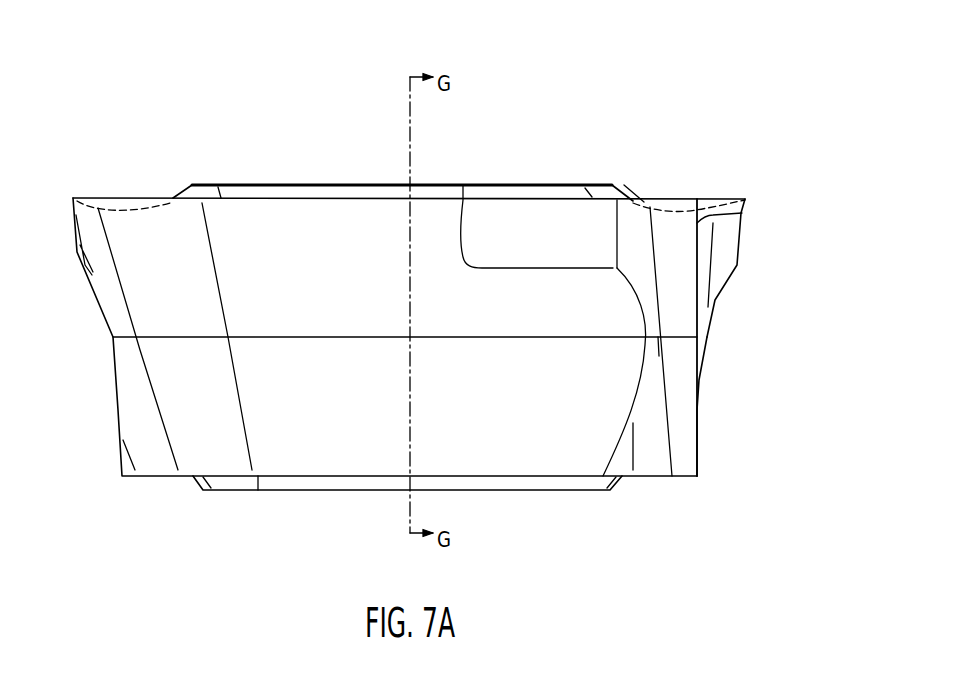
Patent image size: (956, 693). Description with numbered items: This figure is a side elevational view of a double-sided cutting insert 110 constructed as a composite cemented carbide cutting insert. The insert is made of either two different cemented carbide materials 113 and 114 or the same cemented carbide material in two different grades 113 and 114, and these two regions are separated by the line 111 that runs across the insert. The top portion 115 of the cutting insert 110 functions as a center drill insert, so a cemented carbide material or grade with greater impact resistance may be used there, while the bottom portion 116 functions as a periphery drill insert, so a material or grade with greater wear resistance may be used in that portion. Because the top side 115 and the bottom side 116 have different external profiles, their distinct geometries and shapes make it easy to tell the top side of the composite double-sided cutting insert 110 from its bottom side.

The double-sided cutting insert 110 is at (533, 140).
The line 111 is at (480, 342).
The cemented carbide material 113 is at (275, 248).
The cemented carbide material 114 is at (573, 418).
The top portion 115 is at (748, 238).
The bottom portion 116 is at (723, 390).